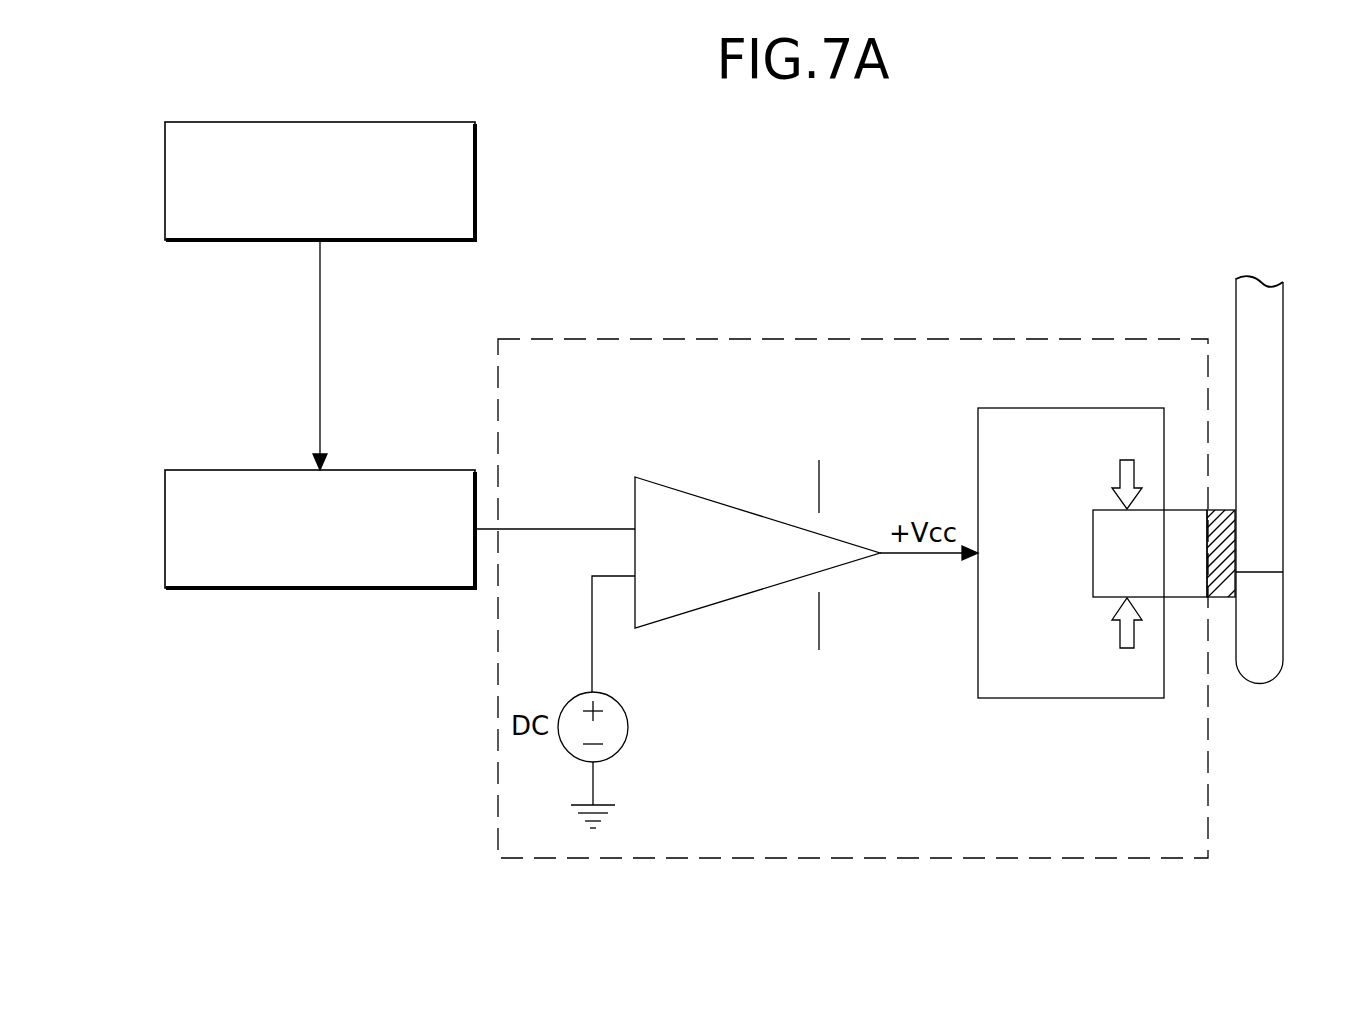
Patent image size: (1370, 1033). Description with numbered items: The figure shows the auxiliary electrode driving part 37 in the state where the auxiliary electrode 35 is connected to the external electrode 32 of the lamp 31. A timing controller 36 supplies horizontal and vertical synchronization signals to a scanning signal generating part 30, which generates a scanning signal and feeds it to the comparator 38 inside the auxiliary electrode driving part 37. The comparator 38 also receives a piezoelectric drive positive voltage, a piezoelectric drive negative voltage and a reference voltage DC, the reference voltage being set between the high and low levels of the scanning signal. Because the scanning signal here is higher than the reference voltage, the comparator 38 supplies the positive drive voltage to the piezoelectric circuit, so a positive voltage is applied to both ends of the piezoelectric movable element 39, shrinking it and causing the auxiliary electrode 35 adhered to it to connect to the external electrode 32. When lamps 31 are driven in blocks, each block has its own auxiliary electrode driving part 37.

The timing controller 36 is at (422, 122).
The scanning signal generating part 30 is at (420, 470).
The auxiliary electrode driving part 37 is at (897, 339).
The comparator 38 is at (835, 523).
The piezoelectric movable element 39 is at (1100, 598).
The lamp 31 is at (1278, 410).
The external electrode 32 is at (1275, 612).
The auxiliary electrode 35 is at (1225, 543).